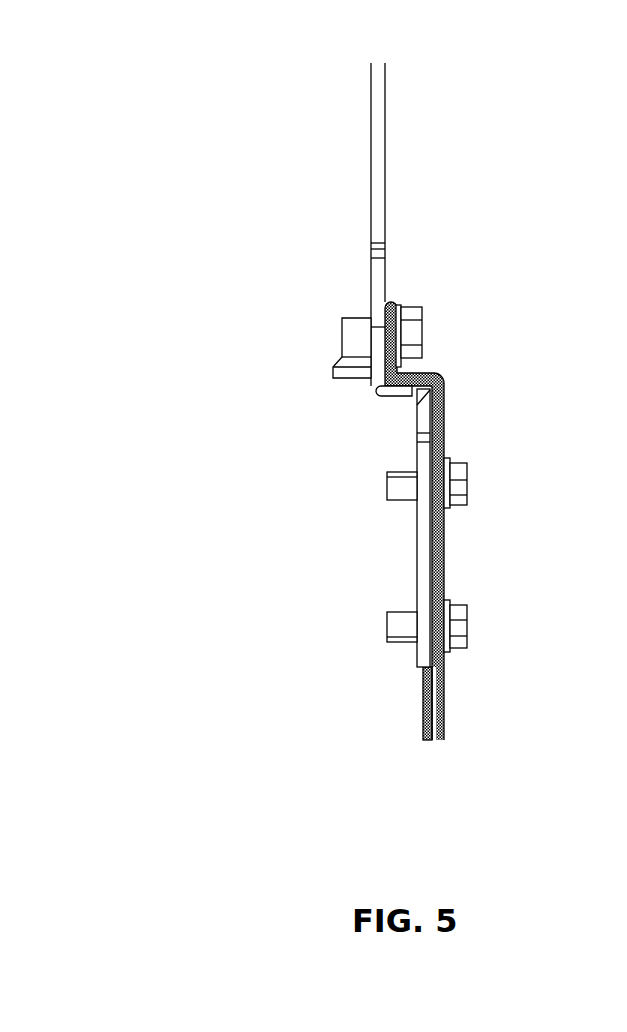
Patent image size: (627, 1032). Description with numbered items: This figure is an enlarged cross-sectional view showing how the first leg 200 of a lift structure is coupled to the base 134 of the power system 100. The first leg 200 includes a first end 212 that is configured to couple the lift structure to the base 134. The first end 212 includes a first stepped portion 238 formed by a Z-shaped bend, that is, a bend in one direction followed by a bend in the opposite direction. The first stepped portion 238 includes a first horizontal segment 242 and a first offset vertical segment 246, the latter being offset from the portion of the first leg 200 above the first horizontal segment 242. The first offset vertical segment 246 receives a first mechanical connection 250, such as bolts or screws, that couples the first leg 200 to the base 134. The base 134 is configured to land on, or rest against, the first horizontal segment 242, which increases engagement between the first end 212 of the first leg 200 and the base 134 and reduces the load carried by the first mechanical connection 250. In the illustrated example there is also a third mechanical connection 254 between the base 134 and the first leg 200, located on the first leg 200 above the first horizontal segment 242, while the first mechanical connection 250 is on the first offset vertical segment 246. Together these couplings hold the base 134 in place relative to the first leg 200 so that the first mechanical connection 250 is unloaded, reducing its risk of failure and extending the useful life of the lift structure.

The power system 100 is at (152, 42).
The first leg 200 is at (378, 194).
The first end 212 is at (124, 505).
The first stepped portion 238 is at (250, 375).
The first horizontal segment 242 is at (397, 390).
The base 134 is at (443, 428).
The first offset vertical segment 246 is at (427, 546).
The first mechanical connection 250 is at (460, 496).
The third mechanical connection 254 is at (412, 330).